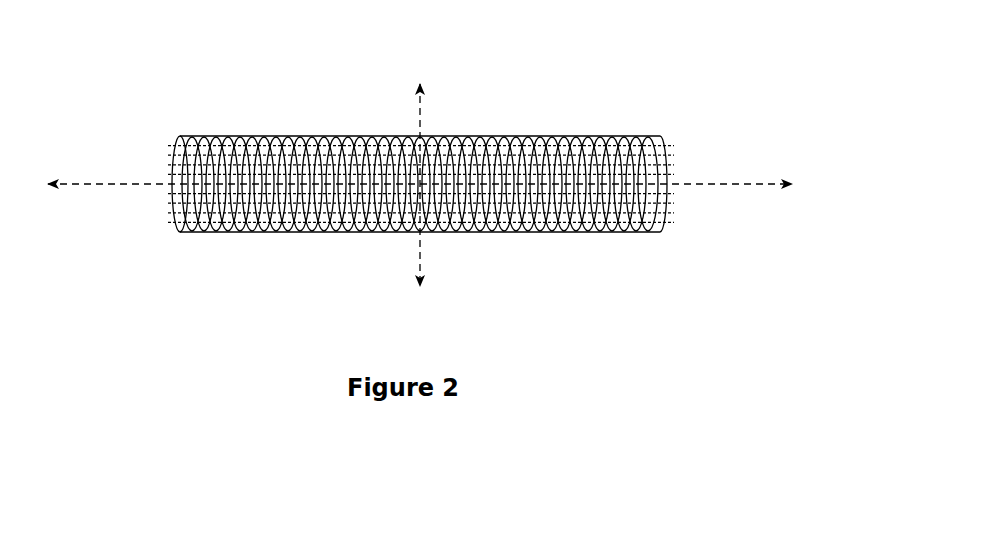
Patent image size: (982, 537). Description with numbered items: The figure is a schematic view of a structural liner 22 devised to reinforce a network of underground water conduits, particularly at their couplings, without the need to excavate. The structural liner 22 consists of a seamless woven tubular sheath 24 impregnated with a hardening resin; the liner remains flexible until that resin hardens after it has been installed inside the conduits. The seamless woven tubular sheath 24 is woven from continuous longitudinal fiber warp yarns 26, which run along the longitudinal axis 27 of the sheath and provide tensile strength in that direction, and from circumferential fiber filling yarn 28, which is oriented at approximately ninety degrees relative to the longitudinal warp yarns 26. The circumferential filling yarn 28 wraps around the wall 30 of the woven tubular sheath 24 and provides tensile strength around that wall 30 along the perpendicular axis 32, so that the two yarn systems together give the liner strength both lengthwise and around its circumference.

The structural liner 22 is at (464, 149).
The seamless woven tubular sheath 24 is at (419, 209).
The longitudinal fiber warp yarns 26 is at (677, 196).
The longitudinal axis 27 is at (428, 156).
The circumferential fiber filling yarn 28 is at (478, 139).
The wall 30 is at (420, 259).
The perpendicular axis 32 is at (459, 191).